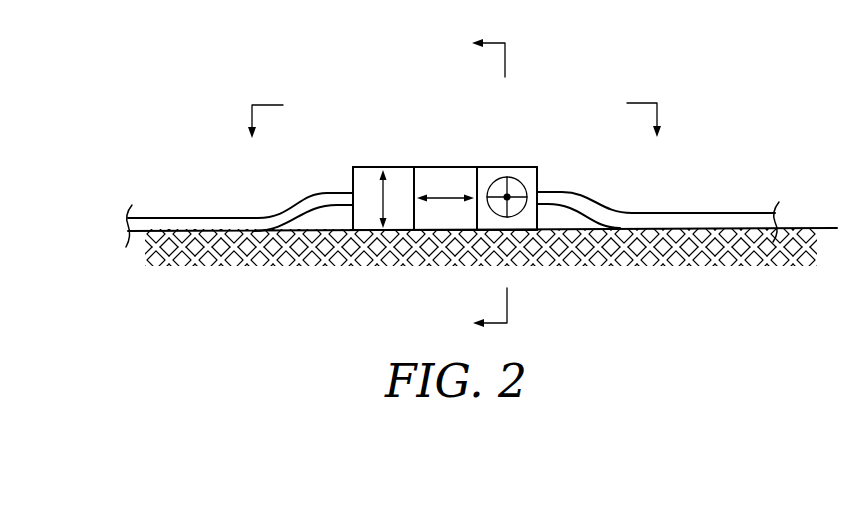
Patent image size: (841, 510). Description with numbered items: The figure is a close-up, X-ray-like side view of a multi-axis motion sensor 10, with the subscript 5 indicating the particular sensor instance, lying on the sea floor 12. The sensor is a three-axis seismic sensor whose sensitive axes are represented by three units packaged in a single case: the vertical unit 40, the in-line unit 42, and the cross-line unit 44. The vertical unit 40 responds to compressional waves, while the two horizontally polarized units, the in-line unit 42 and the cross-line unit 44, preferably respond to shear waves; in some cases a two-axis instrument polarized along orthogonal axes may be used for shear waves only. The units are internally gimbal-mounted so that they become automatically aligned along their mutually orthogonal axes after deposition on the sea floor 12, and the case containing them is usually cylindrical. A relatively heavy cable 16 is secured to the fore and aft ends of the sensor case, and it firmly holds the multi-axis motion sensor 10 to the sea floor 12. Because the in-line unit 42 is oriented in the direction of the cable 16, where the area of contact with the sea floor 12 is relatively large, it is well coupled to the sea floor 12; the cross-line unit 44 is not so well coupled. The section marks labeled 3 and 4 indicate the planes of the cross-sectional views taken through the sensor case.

The multi-axis motion sensor 10 is at (327, 83).
The seismic sensor unit 5 is at (327, 83).
The sea floor 12 is at (805, 228).
The cable 16 is at (572, 190).
The vertical unit 40 is at (367, 165).
The in-line unit 42 is at (446, 165).
The cross-line unit 44 is at (509, 165).
The section line 3- 3 is at (475, 185).
The section line 4- 4 is at (455, 135).